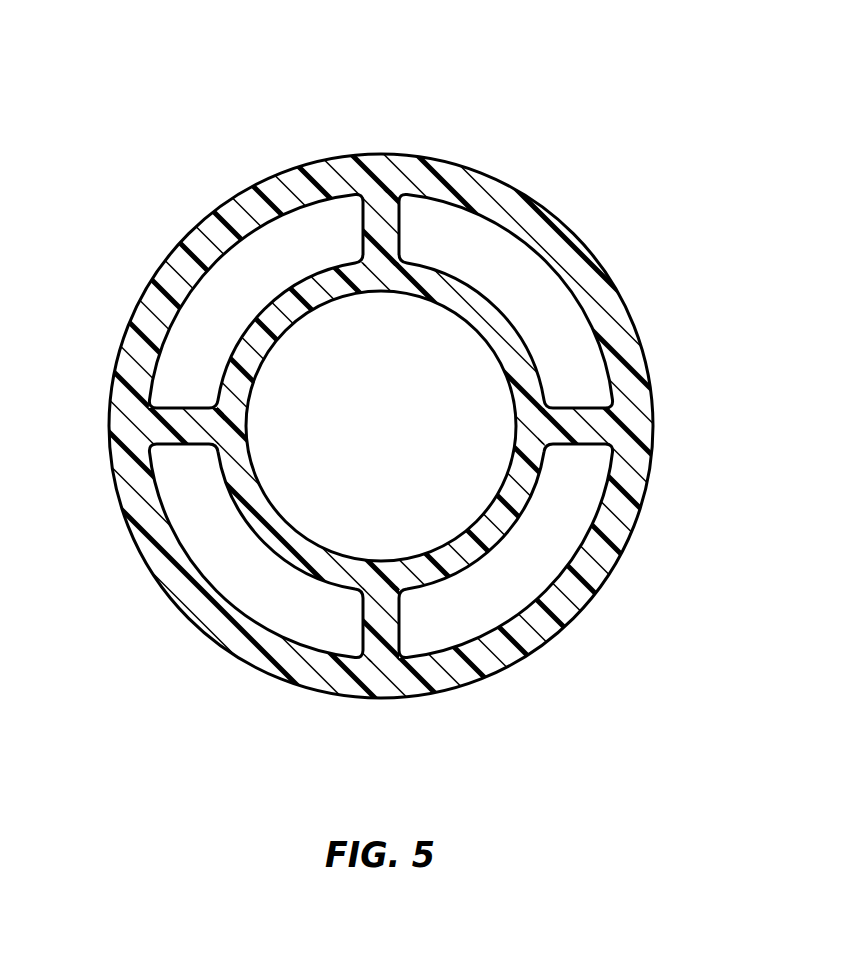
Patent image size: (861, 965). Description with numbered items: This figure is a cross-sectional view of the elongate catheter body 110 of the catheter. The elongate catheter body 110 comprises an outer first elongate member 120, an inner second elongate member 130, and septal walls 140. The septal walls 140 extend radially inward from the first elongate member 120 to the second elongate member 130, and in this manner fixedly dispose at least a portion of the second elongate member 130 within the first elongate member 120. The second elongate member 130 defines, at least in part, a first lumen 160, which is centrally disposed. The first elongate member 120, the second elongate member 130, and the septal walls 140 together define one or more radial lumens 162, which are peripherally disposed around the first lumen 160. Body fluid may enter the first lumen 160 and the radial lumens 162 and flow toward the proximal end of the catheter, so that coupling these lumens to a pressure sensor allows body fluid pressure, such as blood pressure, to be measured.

The elongate catheter body 110 is at (413, 101).
The first elongate member 120 is at (290, 170).
The second elongate member 130 is at (465, 295).
The septal walls 140 is at (400, 222).
The first lumen 160 is at (305, 477).
The radial lumens 162 is at (228, 272).